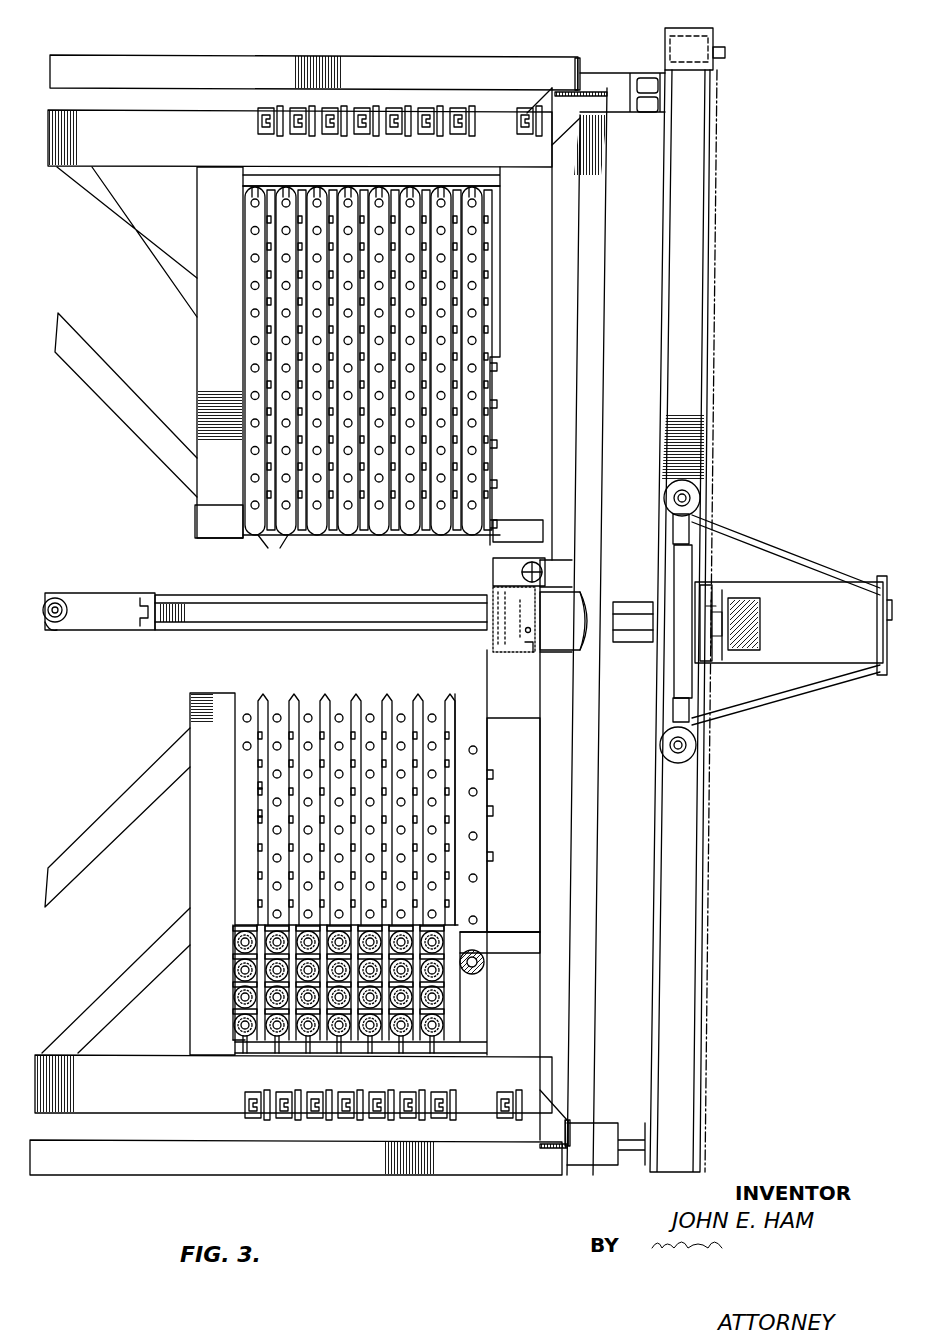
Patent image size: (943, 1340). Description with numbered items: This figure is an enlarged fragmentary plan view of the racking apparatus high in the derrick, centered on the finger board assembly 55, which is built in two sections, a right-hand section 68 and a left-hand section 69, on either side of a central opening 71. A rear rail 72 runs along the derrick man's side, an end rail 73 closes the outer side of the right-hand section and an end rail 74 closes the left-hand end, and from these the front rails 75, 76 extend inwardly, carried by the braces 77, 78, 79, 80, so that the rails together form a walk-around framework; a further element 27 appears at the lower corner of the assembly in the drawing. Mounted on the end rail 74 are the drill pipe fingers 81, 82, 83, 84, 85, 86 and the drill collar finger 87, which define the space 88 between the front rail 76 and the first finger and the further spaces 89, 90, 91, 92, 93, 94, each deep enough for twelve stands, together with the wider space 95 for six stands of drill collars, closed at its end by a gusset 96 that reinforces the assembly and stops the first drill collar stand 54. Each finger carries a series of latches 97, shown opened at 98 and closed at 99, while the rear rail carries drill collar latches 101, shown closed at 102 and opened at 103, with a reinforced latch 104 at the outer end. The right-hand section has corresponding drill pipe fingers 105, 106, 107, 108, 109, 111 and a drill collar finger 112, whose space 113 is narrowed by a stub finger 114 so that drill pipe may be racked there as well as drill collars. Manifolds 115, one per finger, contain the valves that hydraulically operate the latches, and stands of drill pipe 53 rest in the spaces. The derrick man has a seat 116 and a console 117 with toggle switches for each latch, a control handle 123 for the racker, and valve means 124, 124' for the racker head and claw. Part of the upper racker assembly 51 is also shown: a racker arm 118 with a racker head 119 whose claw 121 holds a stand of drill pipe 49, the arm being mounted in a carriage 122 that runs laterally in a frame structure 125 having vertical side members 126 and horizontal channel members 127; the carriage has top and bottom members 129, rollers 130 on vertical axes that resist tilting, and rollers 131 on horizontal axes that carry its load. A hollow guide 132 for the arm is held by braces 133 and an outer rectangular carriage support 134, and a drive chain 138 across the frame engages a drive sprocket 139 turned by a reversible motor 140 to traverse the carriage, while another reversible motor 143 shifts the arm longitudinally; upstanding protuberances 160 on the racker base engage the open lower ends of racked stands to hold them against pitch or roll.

The lower bracket 27 is at (568, 1146).
The stand of drill pipe 49 is at (56, 620).
The upper racker assembly 51 is at (830, 580).
The stands of drill pipe 53 is at (236, 994).
The drill collars 54 is at (485, 966).
The finger board assembly 55 is at (560, 285).
The right-hand finger board section 68 is at (470, 180).
The left-hand finger board section 69 is at (210, 1095).
The central opening 71 is at (175, 657).
The rear rail 72 is at (397, 324).
The end rail 73 is at (200, 122).
The end rail 74 is at (100, 1108).
The front rail 75 is at (207, 358).
The front rail 76 is at (210, 858).
The brace 77 is at (158, 262).
The brace 78 is at (100, 368).
The brace 79 is at (152, 780).
The brace 80 is at (124, 988).
The drill pipe finger 81 is at (252, 1040).
The drill pipe finger 82 is at (286, 1040).
The drill pipe finger 83 is at (320, 1040).
The drill pipe finger 84 is at (354, 1040).
The drill pipe finger 85 is at (388, 1040).
The drill pipe finger 86 is at (414, 1040).
The drill collar finger 87 is at (450, 1040).
The space 88 is at (248, 712).
The space 89 is at (280, 700).
The space 90 is at (310, 705).
The space 91 is at (344, 700).
The space 92 is at (372, 705).
The space 93 is at (404, 702).
The space 94 is at (436, 706).
The space 95 is at (470, 708).
The gusset 96 is at (487, 1026).
The latches 97 is at (247, 926).
The latch in opened position 98 is at (258, 812).
The latch in closed position 99 is at (236, 1016).
The drill collar latches 101 is at (488, 942).
The closed drill collar latch 102 is at (470, 930).
The opened drill collar latch 103 is at (494, 812).
The reinforced drill collar latch 104 is at (492, 728).
The drill pipe finger 105 is at (256, 195).
The drill pipe finger 106 is at (287, 195).
The drill pipe finger 107 is at (318, 195).
The drill pipe finger 108 is at (349, 195).
The drill pipe finger 109 is at (380, 195).
The drill pipe finger 111 is at (411, 195).
The drill collar finger 112 is at (442, 195).
The space 113 is at (452, 530).
The stub finger 114 is at (490, 272).
The manifolds 115 is at (340, 108).
The seat 116 is at (575, 610).
The console 117 is at (492, 603).
The racker arm 118 is at (200, 605).
The racker head 119 is at (108, 598).
The hook or claw 121 is at (56, 596).
The carriage 122 is at (772, 522).
The control handle 123 is at (532, 562).
The valve means 124 is at (490, 656).
The valve means 124' is at (555, 626).
The frame structure 125 is at (690, 240).
The vertical side members 126 is at (712, 60).
The horizontal channel members 127 is at (718, 155).
The top and bottom members 129 is at (676, 674).
The rollers 130 is at (700, 488).
The rollers 131 is at (672, 528).
The hollow guide 132 is at (790, 670).
The braces 133 is at (730, 522).
The outer rectangular carriage support 134 is at (880, 676).
The drive chain 138 is at (710, 858).
The drive sprocket 139 is at (704, 630).
The reversible motor 140 is at (760, 624).
The reversible motor 143 is at (460, 768).
The upstanding protuberances 160 is at (265, 530).